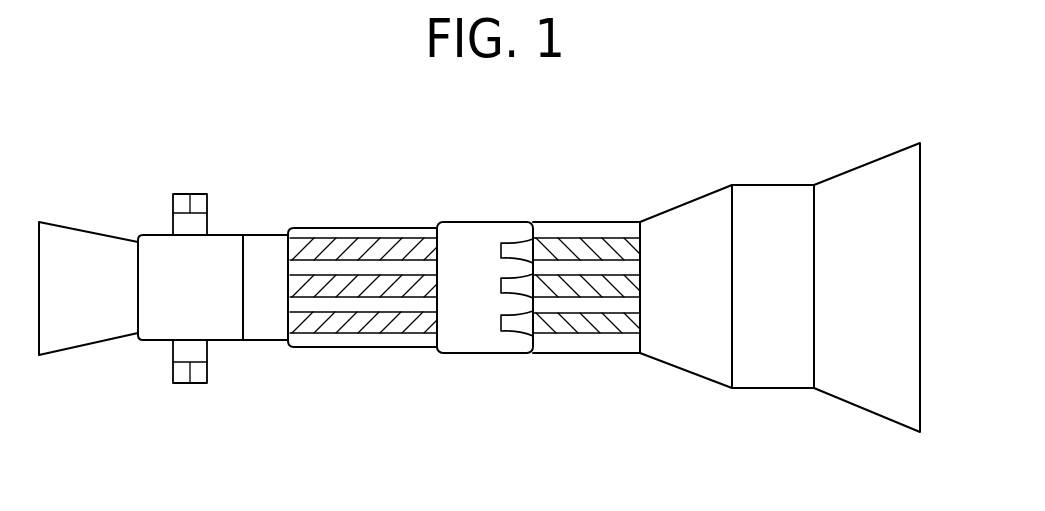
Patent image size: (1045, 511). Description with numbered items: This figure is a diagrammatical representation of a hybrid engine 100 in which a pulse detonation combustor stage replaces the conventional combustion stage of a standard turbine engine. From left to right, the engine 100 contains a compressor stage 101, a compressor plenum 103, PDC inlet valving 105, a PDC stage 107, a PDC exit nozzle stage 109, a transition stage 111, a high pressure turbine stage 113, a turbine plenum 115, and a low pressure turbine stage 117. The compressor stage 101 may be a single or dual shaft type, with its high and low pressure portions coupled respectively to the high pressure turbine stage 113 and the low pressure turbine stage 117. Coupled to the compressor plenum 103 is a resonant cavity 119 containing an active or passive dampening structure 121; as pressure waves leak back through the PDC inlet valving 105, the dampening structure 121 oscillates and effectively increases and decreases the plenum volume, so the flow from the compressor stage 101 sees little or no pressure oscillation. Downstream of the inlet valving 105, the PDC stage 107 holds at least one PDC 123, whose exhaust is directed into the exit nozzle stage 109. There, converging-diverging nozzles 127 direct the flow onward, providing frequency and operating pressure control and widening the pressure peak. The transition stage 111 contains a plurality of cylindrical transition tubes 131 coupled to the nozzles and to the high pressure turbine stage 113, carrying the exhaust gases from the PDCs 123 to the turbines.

The engine 100 is at (645, 117).
The compressor stage 101 is at (63, 235).
The compressor plenum 103 is at (155, 330).
The PDC inlet valving 105 is at (263, 322).
The PDC stage 107 is at (362, 291).
The PDC exit nozzle stage 109 is at (480, 220).
The transition stage 111 is at (586, 300).
The high pressure turbine stage 113 is at (688, 360).
The turbine plenum 115 is at (770, 195).
The low pressure turbine stage 117 is at (863, 395).
The resonant cavity 119 is at (207, 203).
The dampening structure 121 is at (197, 227).
The PDC 123 is at (370, 328).
The nozzles 127 is at (510, 332).
The transition tubes 131 is at (587, 238).